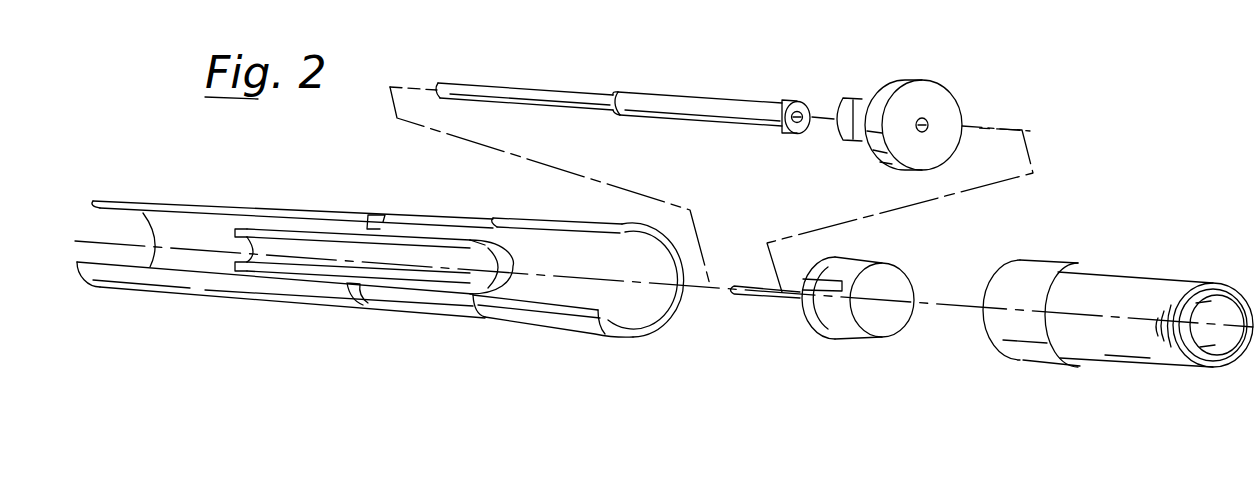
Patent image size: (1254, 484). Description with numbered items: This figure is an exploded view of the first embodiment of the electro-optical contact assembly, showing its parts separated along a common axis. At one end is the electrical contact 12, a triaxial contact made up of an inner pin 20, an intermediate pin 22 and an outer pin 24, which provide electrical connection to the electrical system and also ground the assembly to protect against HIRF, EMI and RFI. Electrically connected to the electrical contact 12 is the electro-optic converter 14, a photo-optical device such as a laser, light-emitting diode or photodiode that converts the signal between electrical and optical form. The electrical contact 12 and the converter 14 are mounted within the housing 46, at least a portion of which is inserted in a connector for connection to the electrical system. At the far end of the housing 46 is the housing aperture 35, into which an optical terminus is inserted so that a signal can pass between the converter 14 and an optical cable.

The electrical contact 12 is at (410, 306).
The electro-optic converter 14 is at (892, 320).
The inner pin 20 is at (541, 62).
The intermediate pin 22 is at (772, 57).
The outer pin 24 is at (297, 237).
The housing aperture 35 is at (1224, 343).
The housing 46 is at (600, 337).